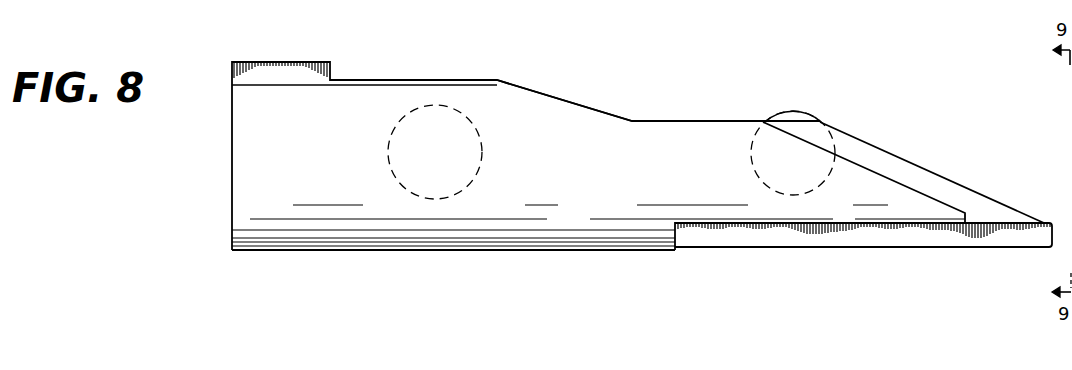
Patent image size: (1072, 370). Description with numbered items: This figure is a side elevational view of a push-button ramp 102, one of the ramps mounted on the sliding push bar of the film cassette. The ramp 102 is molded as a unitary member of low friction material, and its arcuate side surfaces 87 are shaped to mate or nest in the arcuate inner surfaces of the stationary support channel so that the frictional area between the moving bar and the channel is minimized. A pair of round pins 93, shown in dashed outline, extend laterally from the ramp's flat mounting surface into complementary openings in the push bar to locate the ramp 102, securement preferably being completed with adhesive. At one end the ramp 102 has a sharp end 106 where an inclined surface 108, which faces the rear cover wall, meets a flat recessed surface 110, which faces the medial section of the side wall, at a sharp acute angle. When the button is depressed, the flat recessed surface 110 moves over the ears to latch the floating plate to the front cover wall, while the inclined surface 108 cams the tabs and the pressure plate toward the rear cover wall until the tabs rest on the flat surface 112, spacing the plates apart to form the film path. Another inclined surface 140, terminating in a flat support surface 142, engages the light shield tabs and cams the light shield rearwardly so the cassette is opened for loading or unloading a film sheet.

The arcuate side surface 87 is at (568, 202).
The round pin 93 is at (452, 105).
The push-button ramp 102 is at (238, 176).
The sharp end 106 is at (1027, 220).
The inclined surface 108 is at (922, 167).
The flat recessed surface 110 is at (757, 228).
The flat surface 112 is at (710, 120).
The inclined surface 140 is at (570, 97).
The flat support surface 142 is at (438, 78).